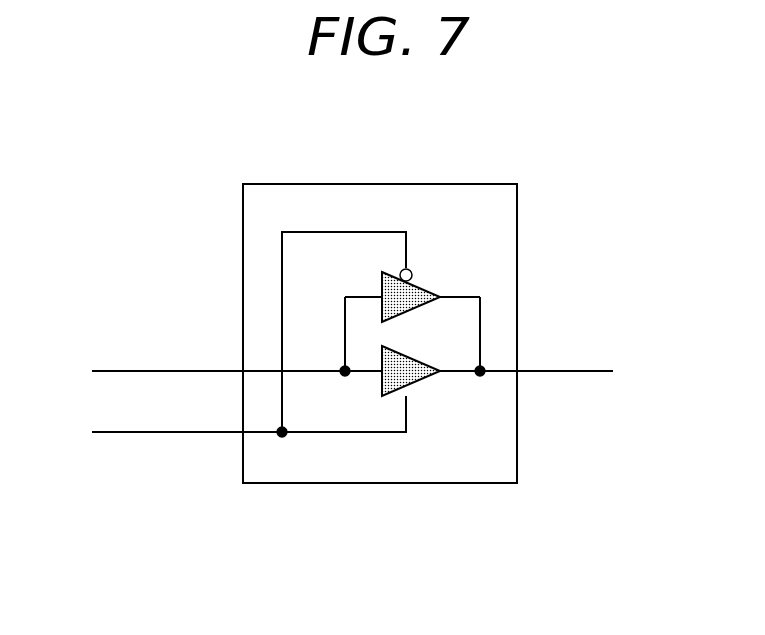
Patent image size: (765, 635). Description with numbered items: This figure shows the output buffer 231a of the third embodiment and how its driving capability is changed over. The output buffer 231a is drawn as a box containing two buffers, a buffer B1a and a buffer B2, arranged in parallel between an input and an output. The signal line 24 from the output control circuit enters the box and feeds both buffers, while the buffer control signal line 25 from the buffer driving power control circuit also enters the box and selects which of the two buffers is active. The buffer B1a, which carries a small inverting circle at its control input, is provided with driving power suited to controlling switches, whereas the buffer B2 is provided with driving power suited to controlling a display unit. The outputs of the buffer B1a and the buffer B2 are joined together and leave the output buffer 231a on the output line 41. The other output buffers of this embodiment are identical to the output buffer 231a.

The output buffer 231a is at (287, 128).
The signal line 24 is at (141, 371).
The buffer control signal line 25 is at (142, 432).
The output line 41 is at (583, 371).
The buffer B1a is at (425, 285).
The buffer B2 is at (420, 380).